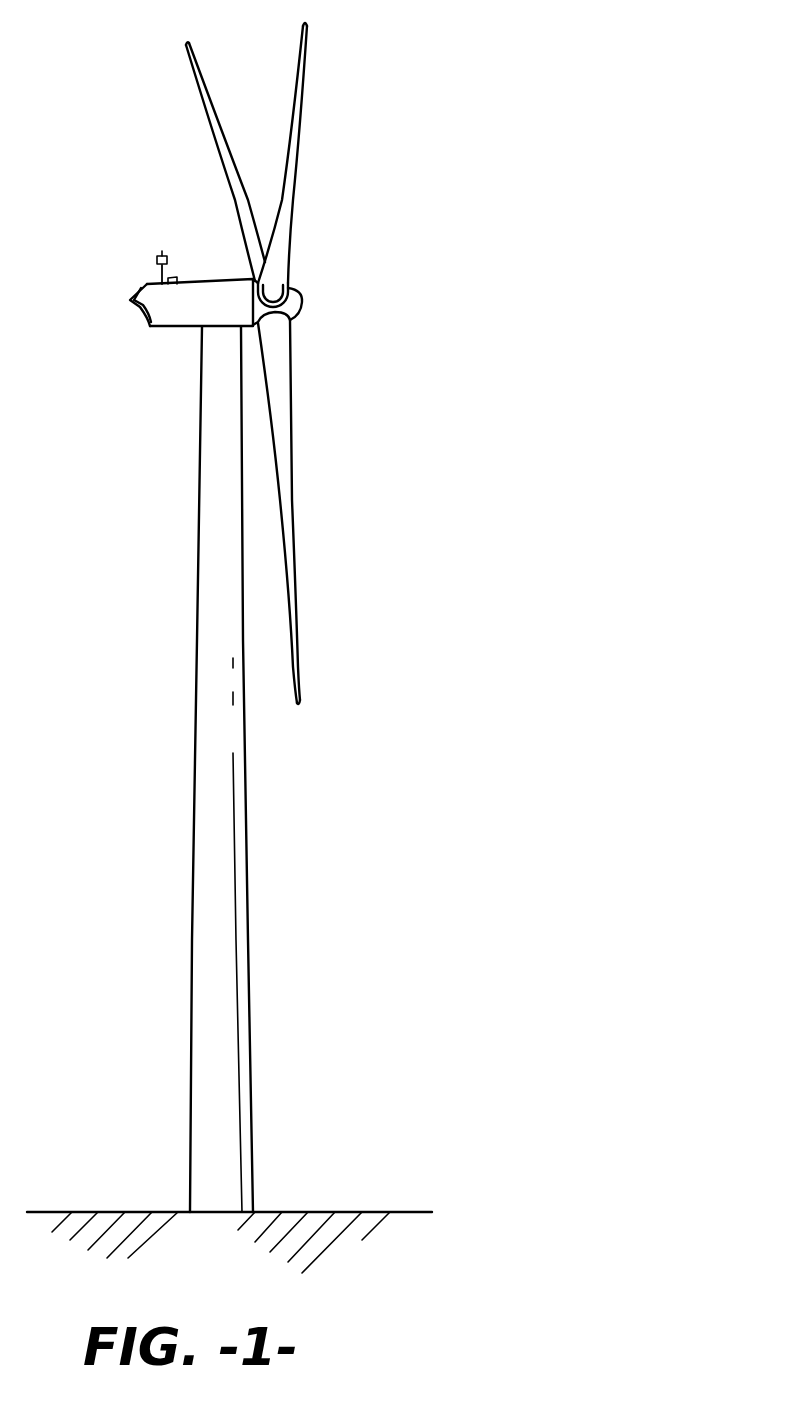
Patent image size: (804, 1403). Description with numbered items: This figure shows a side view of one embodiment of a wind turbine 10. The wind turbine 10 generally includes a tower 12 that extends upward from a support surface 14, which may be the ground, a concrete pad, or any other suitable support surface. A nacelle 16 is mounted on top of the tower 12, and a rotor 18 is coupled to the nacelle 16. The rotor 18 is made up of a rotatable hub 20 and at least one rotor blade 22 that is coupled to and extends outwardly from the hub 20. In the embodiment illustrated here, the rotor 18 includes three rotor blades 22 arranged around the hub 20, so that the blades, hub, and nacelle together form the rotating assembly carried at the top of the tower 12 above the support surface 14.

The wind turbine 10 is at (453, 65).
The tower 12 is at (205, 885).
The support surface 14 is at (112, 1210).
The nacelle 16 is at (175, 328).
The rotor 18 is at (296, 352).
The rotatable hub 20 is at (305, 302).
The rotor blade 22 is at (298, 68).